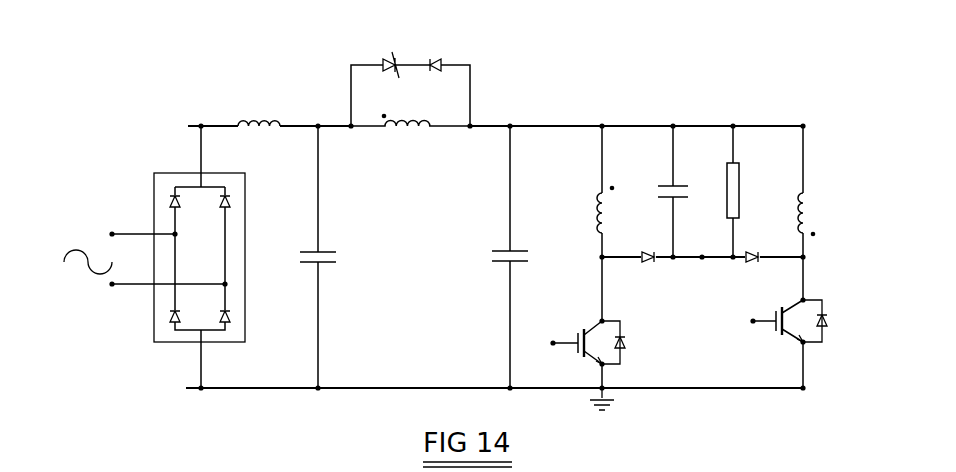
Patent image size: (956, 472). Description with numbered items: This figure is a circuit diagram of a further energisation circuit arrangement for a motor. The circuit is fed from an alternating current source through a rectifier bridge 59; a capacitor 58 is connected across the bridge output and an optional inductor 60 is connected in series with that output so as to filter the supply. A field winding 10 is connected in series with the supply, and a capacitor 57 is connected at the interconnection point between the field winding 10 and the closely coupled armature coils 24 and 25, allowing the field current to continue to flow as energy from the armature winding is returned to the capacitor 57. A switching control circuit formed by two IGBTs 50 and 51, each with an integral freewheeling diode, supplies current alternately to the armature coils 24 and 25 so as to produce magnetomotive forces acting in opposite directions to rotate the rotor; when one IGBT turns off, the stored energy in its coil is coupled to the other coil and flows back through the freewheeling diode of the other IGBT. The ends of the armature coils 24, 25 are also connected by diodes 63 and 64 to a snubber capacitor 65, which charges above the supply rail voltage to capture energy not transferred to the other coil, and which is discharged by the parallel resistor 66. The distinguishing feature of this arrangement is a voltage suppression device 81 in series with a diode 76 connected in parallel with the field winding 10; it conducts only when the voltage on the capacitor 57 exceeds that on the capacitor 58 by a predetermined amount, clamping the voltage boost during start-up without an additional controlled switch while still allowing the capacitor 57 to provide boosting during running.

The field winding 10 is at (404, 130).
The armature coil 24 is at (600, 216).
The armature coil 25 is at (806, 200).
The IGBT 50 is at (576, 340).
The IGBT 51 is at (778, 328).
The capacitor 57 is at (503, 266).
The capacitor 58 is at (323, 266).
The rectifier bridge 59 is at (154, 210).
The inductor 60 is at (247, 122).
The diode 63 is at (651, 262).
The diode 64 is at (753, 262).
The snubber capacitor 65 is at (660, 186).
The parallel resistor 66 is at (740, 192).
The diode 76 is at (440, 62).
The voltage suppression device 81 is at (385, 62).